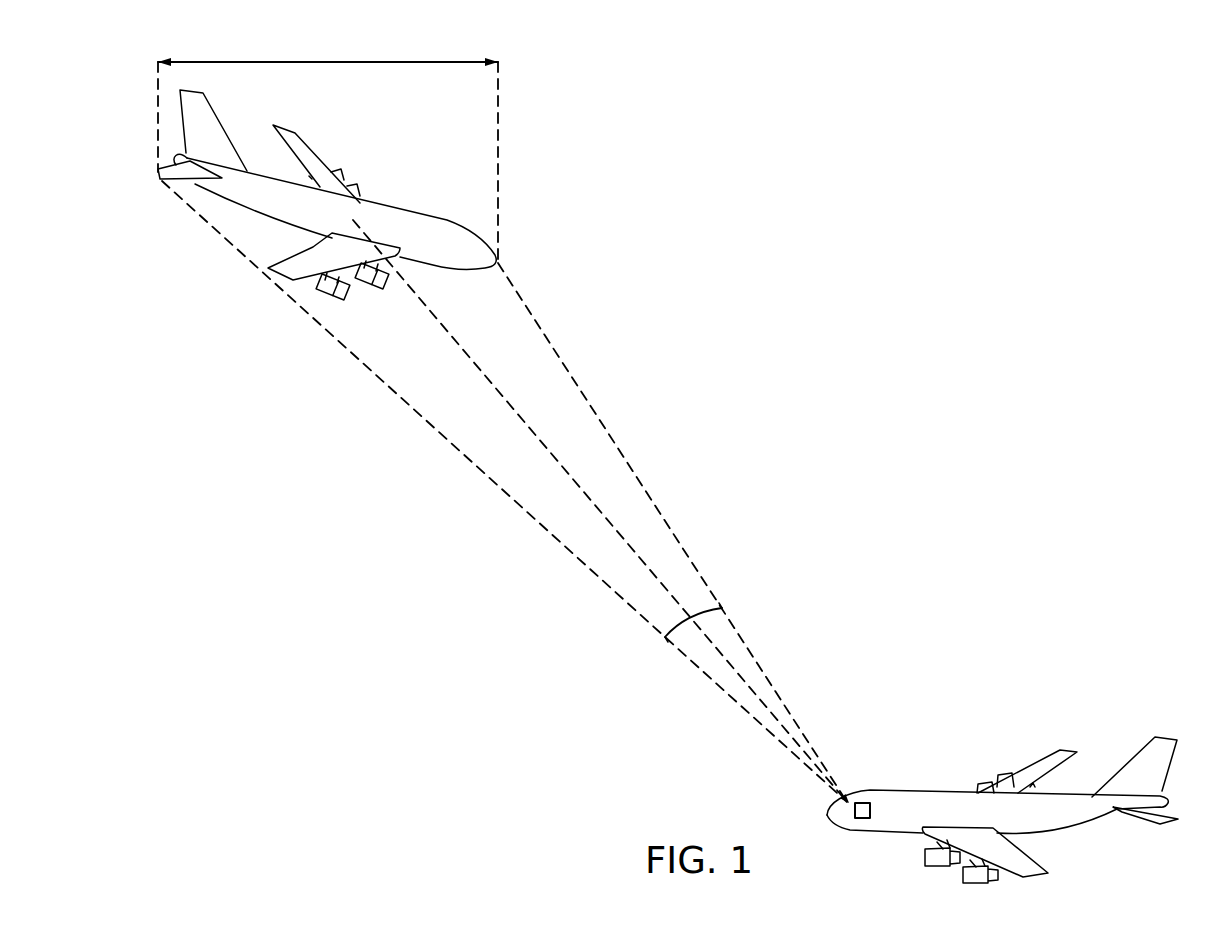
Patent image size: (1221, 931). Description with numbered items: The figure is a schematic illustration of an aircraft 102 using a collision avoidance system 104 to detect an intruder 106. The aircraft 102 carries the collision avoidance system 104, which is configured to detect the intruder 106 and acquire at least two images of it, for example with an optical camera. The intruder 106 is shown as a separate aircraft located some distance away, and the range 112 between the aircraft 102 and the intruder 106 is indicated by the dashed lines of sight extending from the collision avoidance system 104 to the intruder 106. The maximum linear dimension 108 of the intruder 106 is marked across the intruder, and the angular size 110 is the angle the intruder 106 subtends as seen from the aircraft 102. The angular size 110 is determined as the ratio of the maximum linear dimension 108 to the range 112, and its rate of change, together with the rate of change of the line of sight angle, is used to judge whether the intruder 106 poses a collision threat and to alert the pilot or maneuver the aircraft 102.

The aircraft 102 is at (1073, 793).
The collision avoidance system 104 is at (862, 818).
The intruder 106 is at (278, 175).
The maximum linear dimension 108 is at (330, 62).
The angular size 110 is at (700, 592).
The range 112 is at (540, 440).